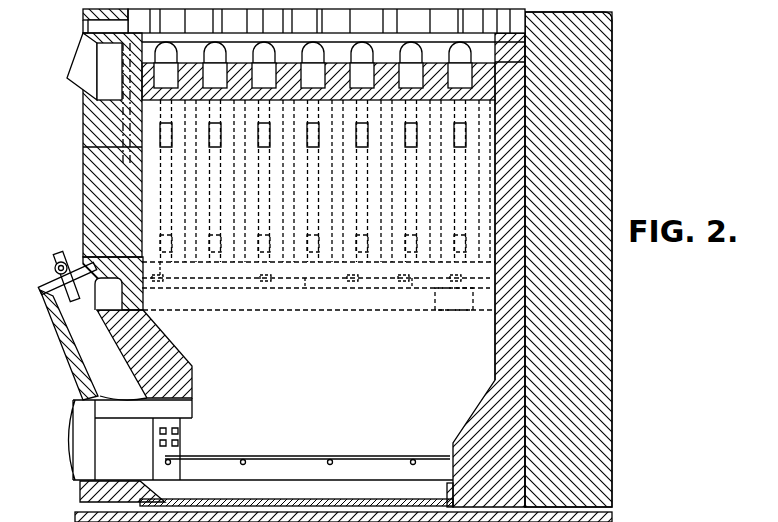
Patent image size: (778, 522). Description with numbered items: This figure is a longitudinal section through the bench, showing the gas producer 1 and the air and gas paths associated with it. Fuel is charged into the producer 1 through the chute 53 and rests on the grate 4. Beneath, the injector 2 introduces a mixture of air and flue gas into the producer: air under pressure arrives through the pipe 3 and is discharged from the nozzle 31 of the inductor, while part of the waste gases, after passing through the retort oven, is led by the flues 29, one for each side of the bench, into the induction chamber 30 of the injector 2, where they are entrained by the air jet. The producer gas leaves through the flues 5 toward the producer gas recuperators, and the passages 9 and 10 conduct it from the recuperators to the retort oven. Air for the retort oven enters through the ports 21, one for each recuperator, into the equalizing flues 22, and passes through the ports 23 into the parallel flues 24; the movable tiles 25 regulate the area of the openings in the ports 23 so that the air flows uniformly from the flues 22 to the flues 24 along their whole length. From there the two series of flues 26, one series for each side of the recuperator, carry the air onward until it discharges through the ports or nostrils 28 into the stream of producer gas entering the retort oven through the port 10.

The gas producer 1 is at (284, 290).
The injector 2 is at (72, 352).
The pipe 3 is at (57, 257).
The grate 4 is at (281, 447).
The flues 5 is at (460, 137).
The passages 9 is at (313, 75).
The port 10 is at (312, 66).
The ports 21 is at (454, 299).
The equalizing flues 22 is at (318, 286).
The ports 23 is at (407, 285).
The parallel flues 24 is at (318, 271).
The movable tiles 25 is at (302, 279).
The series of flues 26 is at (290, 125).
The ports or nostrils 28 is at (351, 60).
The flues 29 is at (108, 294).
The induction chamber 30 is at (72, 312).
The nozzle 31 is at (58, 284).
The chute 53 is at (68, 67).